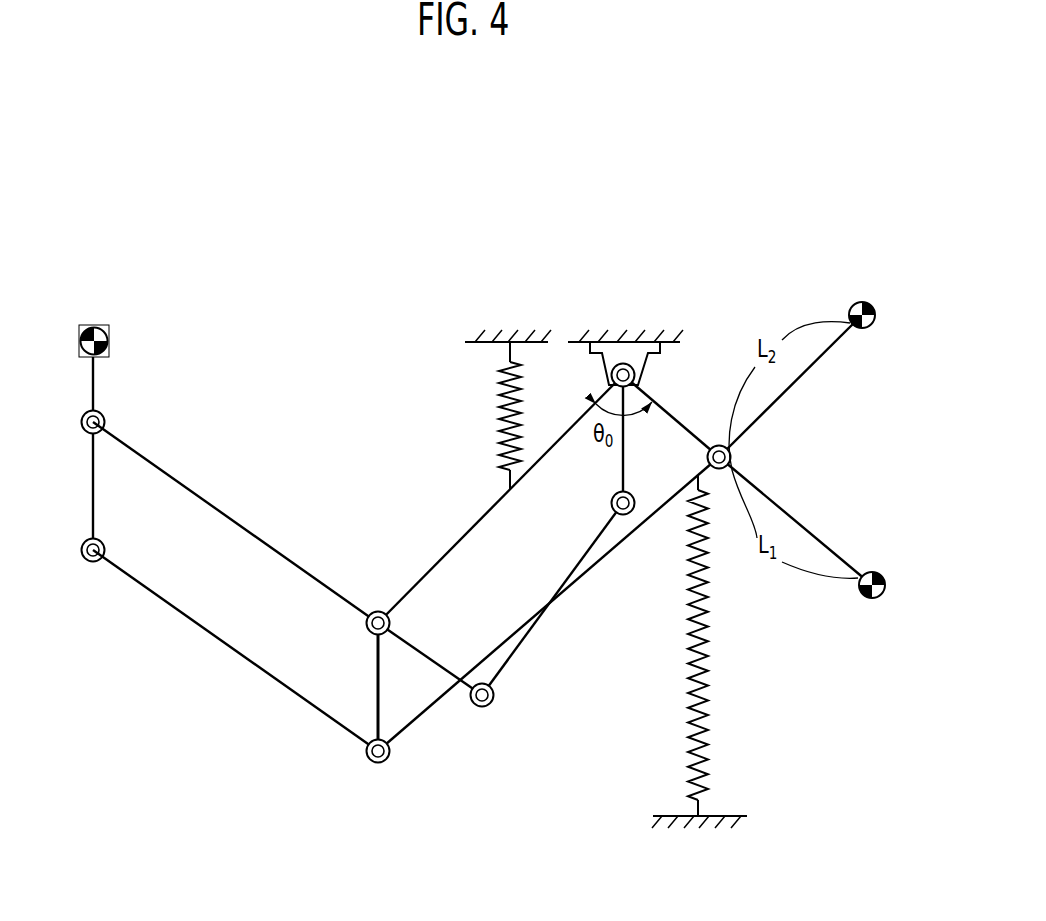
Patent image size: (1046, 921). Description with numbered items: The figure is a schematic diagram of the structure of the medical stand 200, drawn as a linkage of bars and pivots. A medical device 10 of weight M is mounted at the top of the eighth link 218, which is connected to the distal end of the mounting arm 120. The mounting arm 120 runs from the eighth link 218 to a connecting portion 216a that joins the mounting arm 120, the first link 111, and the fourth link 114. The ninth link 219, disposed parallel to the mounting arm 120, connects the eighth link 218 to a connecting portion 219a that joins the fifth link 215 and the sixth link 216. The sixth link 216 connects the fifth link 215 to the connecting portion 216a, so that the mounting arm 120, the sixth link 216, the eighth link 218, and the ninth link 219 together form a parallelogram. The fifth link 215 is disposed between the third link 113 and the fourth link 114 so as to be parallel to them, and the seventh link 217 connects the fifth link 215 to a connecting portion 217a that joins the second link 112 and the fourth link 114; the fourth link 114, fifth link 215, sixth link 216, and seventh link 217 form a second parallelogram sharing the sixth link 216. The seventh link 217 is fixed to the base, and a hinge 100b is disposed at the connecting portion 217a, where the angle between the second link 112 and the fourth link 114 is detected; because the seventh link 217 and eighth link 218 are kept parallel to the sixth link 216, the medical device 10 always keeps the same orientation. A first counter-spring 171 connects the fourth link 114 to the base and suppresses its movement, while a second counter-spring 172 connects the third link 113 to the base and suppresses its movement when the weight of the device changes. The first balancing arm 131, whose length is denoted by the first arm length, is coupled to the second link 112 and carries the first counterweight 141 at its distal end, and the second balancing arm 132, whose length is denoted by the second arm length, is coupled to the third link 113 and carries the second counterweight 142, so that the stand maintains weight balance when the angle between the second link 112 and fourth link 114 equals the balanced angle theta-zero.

The medical stand 200 is at (363, 210).
The medical device 10 is at (127, 332).
The eighth link 218 is at (93, 482).
The mounting arm 120 is at (170, 470).
The ninth link 219 is at (140, 585).
The sixth link 216 is at (376, 688).
The connecting portion 216a is at (369, 605).
The connecting portion 219a is at (371, 770).
The first link 111 is at (428, 660).
The fourth link 114 is at (482, 517).
The third link 113 is at (565, 622).
The fifth link 215 is at (497, 638).
The seventh link 217 is at (617, 465).
The connecting portion 217a is at (653, 368).
The hinge 100b is at (620, 352).
The second link 112 is at (697, 432).
The first counter-spring 171 is at (503, 390).
The second counter-spring 172 is at (705, 767).
The first balancing arm 131 is at (800, 517).
The second balancing arm 132 is at (815, 372).
The first counterweight 141 is at (877, 565).
The second counterweight 142 is at (864, 295).